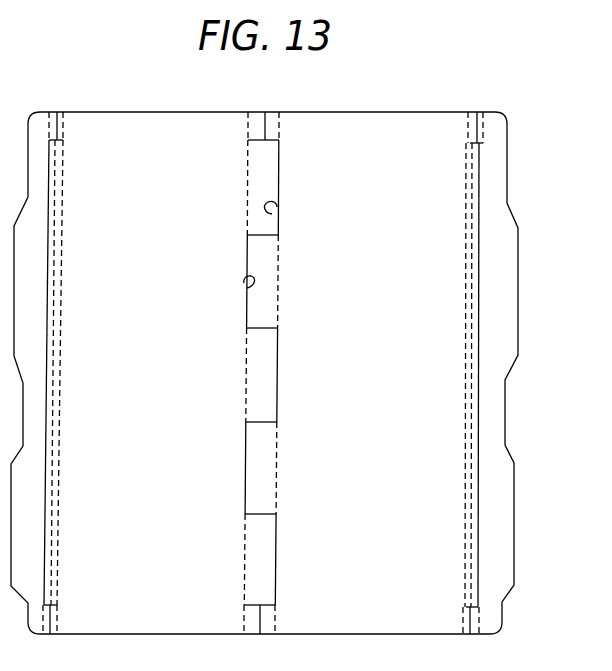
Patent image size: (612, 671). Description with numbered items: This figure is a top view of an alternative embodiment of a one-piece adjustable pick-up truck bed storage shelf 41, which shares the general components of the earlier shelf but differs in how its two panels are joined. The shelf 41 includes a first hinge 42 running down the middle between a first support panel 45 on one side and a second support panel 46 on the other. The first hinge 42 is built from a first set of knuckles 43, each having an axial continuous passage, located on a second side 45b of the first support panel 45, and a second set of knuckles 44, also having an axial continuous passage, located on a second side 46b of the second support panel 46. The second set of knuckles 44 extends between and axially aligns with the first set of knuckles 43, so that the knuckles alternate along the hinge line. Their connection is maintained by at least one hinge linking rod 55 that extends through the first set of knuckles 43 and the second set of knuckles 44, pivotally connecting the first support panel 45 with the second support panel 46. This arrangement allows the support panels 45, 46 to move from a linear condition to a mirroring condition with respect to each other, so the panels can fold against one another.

The pick-up truck bed storage shelf 41 is at (507, 84).
The first hinge 42 is at (274, 103).
The first set of knuckles 43 is at (265, 283).
The second set of knuckles 44 is at (257, 368).
The first support panel 45 is at (108, 126).
The second support panel 46 is at (402, 130).
The second side of first support panel 45b is at (247, 288).
The second side of second support panel 46b is at (272, 214).
The hinge linking rod 55 is at (262, 184).